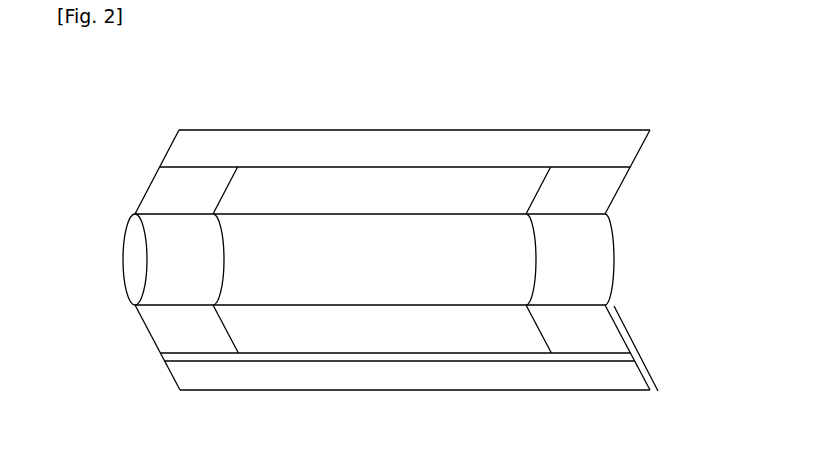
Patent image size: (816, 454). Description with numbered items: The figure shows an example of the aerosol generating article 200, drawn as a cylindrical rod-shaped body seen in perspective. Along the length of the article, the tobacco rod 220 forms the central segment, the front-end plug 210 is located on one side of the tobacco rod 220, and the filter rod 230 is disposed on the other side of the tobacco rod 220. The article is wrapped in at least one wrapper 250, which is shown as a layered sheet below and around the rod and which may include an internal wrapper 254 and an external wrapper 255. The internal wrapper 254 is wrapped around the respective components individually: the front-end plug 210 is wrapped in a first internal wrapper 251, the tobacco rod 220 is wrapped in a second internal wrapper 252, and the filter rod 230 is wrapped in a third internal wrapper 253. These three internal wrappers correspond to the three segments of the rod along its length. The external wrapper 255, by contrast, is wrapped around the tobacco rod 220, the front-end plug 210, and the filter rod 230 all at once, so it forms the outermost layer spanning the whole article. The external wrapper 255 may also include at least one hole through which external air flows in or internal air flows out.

The aerosol generating article 200 is at (386, 237).
The front-end plug 210 is at (133, 252).
The tobacco rod 220 is at (400, 233).
The filter rod 230 is at (592, 260).
The wrapper 250 is at (411, 375).
The first internal wrapper 251 is at (197, 343).
The second internal wrapper 252 is at (295, 343).
The third internal wrapper 253 is at (602, 345).
The internal wrapper 254 is at (407, 362).
The external wrapper 255 is at (552, 378).